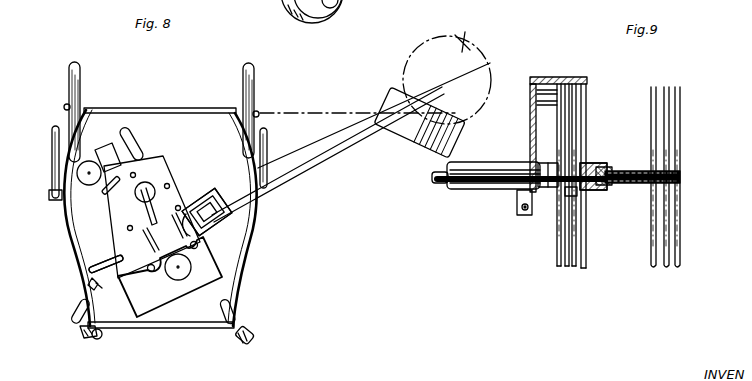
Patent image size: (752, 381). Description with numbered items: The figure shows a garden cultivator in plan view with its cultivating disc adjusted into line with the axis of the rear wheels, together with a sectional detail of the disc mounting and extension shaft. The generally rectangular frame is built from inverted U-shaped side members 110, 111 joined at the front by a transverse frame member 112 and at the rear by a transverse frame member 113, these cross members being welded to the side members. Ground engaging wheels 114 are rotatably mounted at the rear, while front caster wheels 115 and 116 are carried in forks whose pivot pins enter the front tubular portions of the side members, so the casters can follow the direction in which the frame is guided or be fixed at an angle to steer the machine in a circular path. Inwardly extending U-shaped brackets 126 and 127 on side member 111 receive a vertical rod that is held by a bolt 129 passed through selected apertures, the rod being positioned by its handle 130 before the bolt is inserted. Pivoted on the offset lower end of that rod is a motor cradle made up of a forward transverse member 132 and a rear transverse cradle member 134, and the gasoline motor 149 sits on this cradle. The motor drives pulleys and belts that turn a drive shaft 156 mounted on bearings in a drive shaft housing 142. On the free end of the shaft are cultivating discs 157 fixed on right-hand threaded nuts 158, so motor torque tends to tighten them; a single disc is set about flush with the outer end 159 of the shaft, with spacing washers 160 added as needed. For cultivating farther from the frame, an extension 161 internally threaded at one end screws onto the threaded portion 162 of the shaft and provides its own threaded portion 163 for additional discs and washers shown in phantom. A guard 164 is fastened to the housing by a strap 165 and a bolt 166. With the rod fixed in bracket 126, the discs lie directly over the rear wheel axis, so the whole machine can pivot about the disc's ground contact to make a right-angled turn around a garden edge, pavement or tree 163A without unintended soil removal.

In FIG. 8, the inverted U-shaped side member 110 is at (253, 240).
In FIG. 8, the inverted U-shaped side member 111 is at (62, 217).
In FIG. 8, the transverse frame member 112 is at (157, 328).
In FIG. 8, the transverse frame member 113 is at (157, 108).
In FIG. 8, the ground engaging wheels 114 is at (76, 90).
In FIG. 8, the caster wheel 115 is at (341, 11).
In FIG. 8, the caster wheel 116 is at (94, 338).
In FIG. 8, the U-shaped bracket 126 is at (88, 268).
In FIG. 8, the U-shaped bracket 127 is at (82, 200).
In FIG. 8, the bolt 129 is at (98, 281).
In FIG. 8, the handle 130 is at (115, 260).
In FIG. 8, the forward transverse member 132 is at (233, 233).
In FIG. 8, the rear transverse cradle member 134 is at (200, 190).
In FIG. 8, the drive shaft housing 142 is at (342, 148).
In FIG. 9, the drive shaft housing 142 is at (472, 192).
In FIG. 8, the gasoline motor 149 is at (153, 296).
In FIG. 9, the drive shaft 156 is at (438, 185).
In FIG. 9, the cultivating discs 157 is at (577, 270).
In FIG. 9, the threaded nuts 158 is at (574, 202).
In FIG. 9, the outer end 159 is at (596, 162).
In FIG. 9, the spacing washers 160 is at (552, 165).
In FIG. 9, the extension 161 is at (610, 184).
In FIG. 9, the threaded portion 162 is at (600, 191).
In FIG. 9, the threaded portion 163 is at (637, 172).
In FIG. 8, the tree 163A is at (462, 42).
In FIG. 9, the guard 164 is at (552, 77).
In FIG. 9, the strap 165 is at (520, 200).
In FIG. 9, the bolt 166 is at (523, 212).